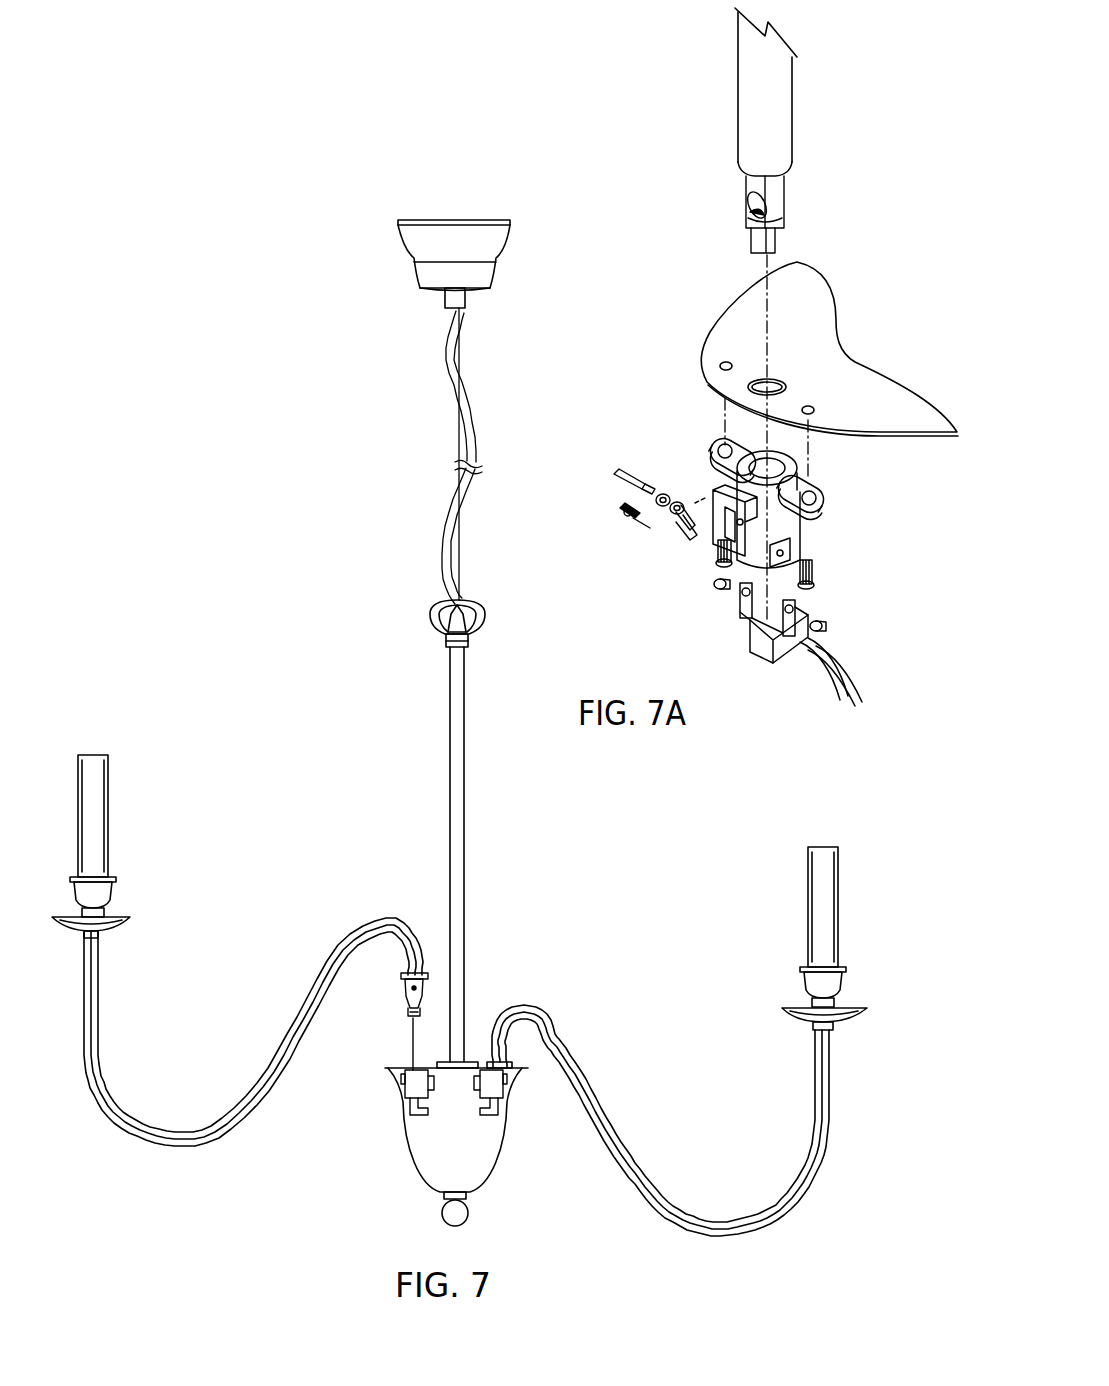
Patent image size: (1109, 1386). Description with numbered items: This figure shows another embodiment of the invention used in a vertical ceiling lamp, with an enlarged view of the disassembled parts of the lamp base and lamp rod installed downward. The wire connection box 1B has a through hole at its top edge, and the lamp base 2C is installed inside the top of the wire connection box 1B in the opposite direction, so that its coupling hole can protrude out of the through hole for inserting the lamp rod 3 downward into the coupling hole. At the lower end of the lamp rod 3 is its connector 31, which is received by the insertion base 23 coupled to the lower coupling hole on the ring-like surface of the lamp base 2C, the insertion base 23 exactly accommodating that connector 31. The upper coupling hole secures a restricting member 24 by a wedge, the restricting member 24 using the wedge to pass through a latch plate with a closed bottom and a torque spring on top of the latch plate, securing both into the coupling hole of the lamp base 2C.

In FIG. 7, the lamp rod 3 is at (405, 993).
In FIG. 7A, the lamp rod 3 is at (752, 127).
In FIG. 7A, the connector 31 is at (746, 212).
In FIG. 7, the wire connection box 1B is at (417, 1127).
In FIG. 7A, the wire connection box 1B is at (728, 337).
In FIG. 7A, the restricting member 24 is at (660, 485).
In FIG. 7A, the lamp base 2C is at (787, 520).
In FIG. 7A, the insertion base 23 is at (760, 640).